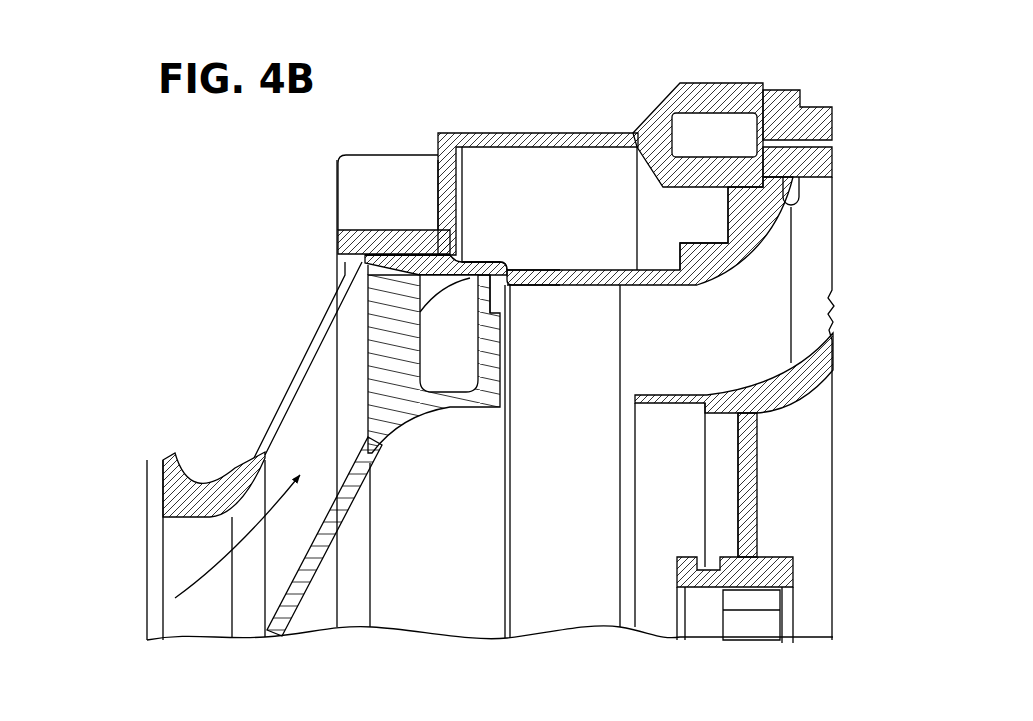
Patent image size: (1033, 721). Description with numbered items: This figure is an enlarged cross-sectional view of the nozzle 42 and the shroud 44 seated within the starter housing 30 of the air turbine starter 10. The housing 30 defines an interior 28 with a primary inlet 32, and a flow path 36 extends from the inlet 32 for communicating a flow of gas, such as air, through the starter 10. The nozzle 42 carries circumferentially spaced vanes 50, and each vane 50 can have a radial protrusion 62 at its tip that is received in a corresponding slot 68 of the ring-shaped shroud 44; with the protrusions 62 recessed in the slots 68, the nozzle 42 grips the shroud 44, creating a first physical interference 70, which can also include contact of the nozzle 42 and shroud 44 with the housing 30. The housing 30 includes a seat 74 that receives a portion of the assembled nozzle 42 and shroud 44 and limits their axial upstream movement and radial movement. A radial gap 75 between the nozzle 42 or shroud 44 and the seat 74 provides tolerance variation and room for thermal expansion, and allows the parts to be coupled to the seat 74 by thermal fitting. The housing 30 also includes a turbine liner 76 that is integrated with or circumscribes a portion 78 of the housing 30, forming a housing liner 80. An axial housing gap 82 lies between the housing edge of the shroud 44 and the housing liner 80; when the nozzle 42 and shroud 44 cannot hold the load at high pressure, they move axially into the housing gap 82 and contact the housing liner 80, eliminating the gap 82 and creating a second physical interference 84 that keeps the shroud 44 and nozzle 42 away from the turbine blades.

The air turbine starter 10 is at (160, 155).
The interior 28 is at (347, 430).
The starter housing 30 is at (517, 128).
The primary inlet 32 is at (143, 578).
The flow path 36 is at (210, 585).
The nozzle 42 is at (288, 578).
The shroud 44 is at (475, 263).
The vanes 50 is at (368, 342).
The radial protrusion 62 is at (362, 258).
The slots 68 is at (403, 258).
The first physical interference 70 is at (377, 250).
The seat 74 is at (365, 257).
The radial gap 75 is at (378, 250).
The turbine liner 76 is at (642, 267).
The portion of the housing 78 is at (590, 270).
The housing liner 80 is at (642, 267).
The housing gap 82 is at (513, 270).
The second physical interference 84 is at (524, 266).